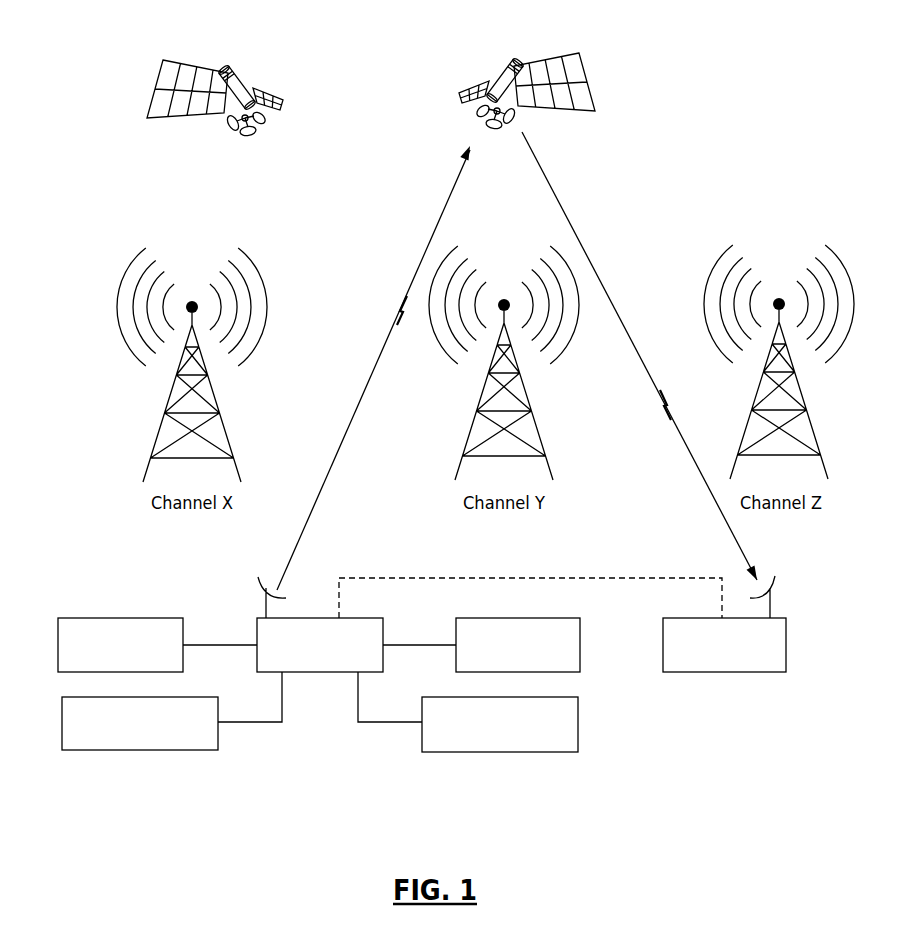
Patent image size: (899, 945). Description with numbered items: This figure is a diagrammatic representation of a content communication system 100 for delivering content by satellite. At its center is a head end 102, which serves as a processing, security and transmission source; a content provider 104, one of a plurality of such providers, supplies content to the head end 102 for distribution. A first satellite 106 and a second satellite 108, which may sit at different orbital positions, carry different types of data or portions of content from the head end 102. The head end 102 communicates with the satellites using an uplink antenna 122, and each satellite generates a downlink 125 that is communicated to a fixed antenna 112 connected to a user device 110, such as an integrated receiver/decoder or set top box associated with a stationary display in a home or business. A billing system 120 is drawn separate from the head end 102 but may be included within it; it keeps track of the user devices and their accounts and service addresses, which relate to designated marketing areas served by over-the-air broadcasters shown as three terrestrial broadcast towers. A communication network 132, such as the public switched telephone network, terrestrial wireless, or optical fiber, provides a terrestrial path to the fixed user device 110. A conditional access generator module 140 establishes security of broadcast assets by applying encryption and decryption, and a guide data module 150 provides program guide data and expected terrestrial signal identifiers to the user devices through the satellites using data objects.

The content communication system 100 is at (106, 563).
The head end 102 is at (320, 673).
The content provider 104 is at (580, 644).
The first satellite 106 is at (517, 66).
The second satellite 108 is at (227, 67).
The user device 110 is at (725, 672).
The fixed antenna 112 is at (775, 576).
The billing system 120 is at (58, 644).
The uplink antenna 122 is at (258, 576).
The downlink 125 is at (627, 328).
The communication network 132 is at (364, 576).
The conditional access generator module 140 is at (578, 720).
The guide data module 150 is at (138, 750).